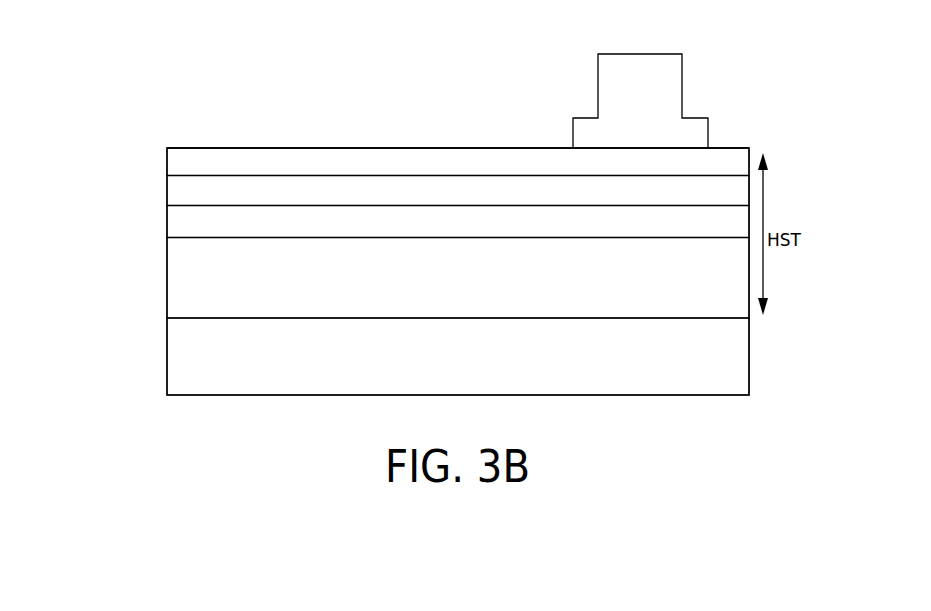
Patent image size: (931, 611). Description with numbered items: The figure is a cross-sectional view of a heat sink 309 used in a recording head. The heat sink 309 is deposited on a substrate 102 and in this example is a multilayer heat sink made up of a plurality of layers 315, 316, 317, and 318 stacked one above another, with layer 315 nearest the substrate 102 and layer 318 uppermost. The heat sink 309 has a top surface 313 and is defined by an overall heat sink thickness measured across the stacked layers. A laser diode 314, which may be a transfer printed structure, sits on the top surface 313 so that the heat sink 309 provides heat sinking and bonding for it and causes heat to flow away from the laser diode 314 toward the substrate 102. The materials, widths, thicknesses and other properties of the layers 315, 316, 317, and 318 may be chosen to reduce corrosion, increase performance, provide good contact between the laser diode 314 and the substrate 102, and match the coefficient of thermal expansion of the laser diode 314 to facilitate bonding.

The heat sink 309 is at (68, 108).
The heat sink layer 318 is at (177, 160).
The heat sink layer 317 is at (180, 192).
The heat sink layer 316 is at (180, 221).
The heat sink layer 315 is at (180, 274).
The substrate 102 is at (175, 357).
The top surface 313 is at (273, 148).
The laser diode 314 is at (605, 73).